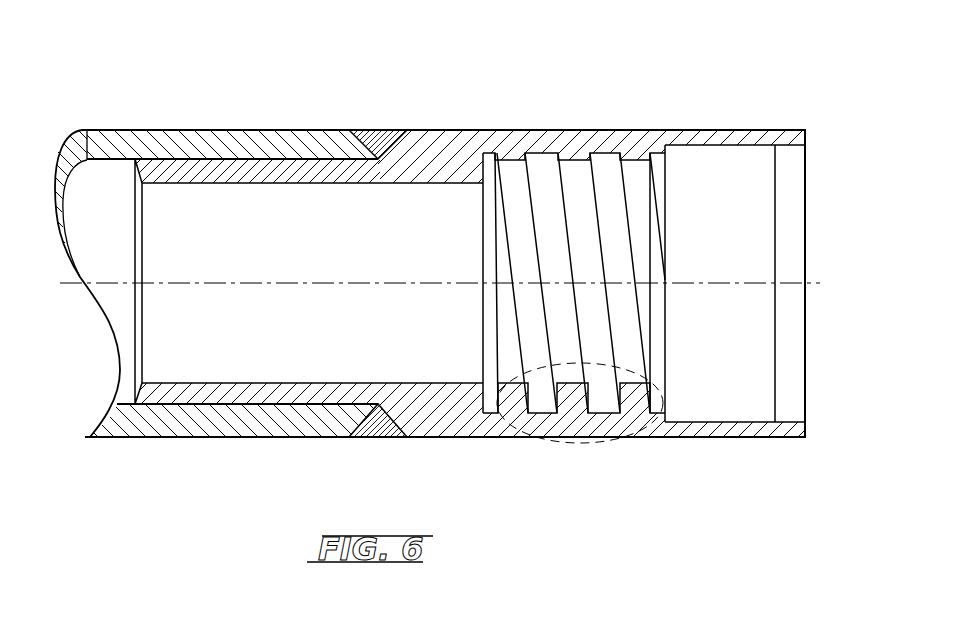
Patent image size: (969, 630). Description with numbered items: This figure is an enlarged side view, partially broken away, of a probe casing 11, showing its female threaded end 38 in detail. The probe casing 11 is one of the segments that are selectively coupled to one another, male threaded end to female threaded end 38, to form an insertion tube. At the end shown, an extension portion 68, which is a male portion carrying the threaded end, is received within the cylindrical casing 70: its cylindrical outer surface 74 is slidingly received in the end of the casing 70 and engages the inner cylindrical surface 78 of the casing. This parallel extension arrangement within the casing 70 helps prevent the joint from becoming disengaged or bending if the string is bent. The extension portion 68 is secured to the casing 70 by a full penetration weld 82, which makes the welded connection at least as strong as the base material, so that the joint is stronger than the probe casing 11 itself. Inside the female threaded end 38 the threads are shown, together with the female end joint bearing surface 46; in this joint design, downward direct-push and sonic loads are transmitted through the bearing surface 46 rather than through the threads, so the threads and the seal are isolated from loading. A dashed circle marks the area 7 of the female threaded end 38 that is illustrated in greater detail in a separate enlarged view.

The probe casing 11 is at (437, 90).
The inner cylindrical surface 78 is at (105, 172).
The cylindrical outer surface 74 is at (238, 158).
The casing 70 is at (303, 423).
The extension portion 68 is at (183, 393).
The full penetration weld 82 is at (380, 135).
The female end joint bearing surface 46 is at (483, 170).
The female threaded end 38 is at (822, 208).
The area 7 is at (583, 445).